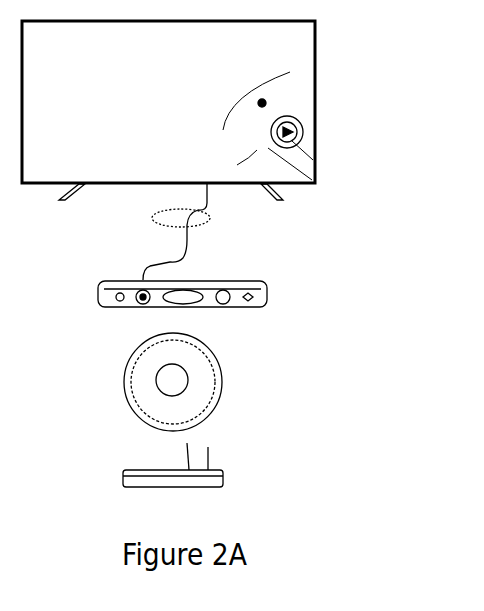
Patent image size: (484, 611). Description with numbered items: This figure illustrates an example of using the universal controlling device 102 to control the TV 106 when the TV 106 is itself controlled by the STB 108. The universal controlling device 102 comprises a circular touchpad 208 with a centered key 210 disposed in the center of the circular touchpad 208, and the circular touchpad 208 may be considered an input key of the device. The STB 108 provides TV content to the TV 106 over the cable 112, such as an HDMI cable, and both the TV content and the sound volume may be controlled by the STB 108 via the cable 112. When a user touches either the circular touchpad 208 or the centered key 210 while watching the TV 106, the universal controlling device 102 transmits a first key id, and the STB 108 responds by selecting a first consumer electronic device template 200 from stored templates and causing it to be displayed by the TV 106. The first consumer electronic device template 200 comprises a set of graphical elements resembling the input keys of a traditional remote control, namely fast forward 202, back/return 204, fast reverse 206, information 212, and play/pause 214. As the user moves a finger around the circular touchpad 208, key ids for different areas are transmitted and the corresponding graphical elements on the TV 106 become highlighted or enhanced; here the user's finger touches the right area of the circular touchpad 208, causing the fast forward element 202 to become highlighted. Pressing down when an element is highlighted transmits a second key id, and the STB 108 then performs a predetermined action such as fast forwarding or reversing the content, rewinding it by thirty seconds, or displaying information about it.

The universal controlling device 102 is at (195, 428).
The TV 106 is at (276, 198).
The STB 108 is at (218, 310).
The cable 112 is at (152, 219).
The first consumer electronic device template 200 is at (288, 108).
The fast forward graphical element 202 is at (302, 148).
The back/return element 204 is at (237, 165).
The fast reverse element 206 is at (223, 130).
The circular touchpad 208 is at (173, 410).
The centered key 210 is at (150, 412).
The information element 212 is at (263, 100).
The play/pause element 214 is at (318, 183).